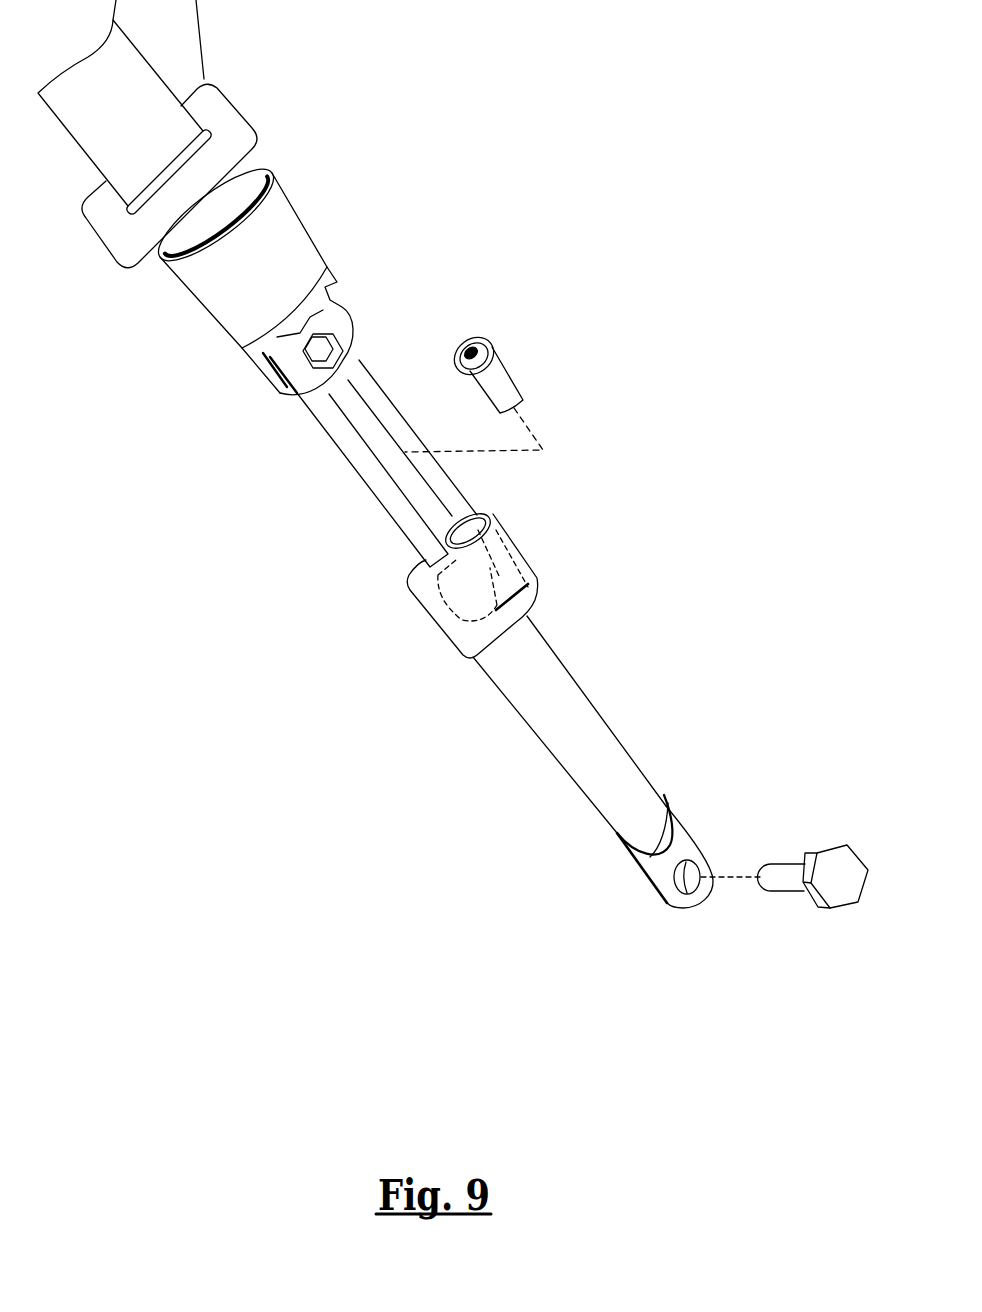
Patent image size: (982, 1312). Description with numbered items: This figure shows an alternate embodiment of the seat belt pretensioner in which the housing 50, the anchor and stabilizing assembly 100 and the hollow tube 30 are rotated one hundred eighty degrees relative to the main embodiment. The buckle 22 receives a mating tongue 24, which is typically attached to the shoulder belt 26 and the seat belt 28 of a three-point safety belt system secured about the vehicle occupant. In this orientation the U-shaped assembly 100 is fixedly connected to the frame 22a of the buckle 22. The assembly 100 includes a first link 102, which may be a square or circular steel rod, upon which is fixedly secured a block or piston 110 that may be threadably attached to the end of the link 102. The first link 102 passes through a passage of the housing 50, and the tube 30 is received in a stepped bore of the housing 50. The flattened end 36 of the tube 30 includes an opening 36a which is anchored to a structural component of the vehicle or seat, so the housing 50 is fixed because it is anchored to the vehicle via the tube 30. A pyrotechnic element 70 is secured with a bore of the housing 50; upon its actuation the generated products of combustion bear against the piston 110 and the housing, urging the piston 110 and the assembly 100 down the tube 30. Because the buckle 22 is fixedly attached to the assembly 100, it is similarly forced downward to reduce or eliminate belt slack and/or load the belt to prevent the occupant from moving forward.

The buckle 22 is at (293, 195).
The frame of the buckle 22a is at (342, 307).
The tongue 24 is at (227, 127).
The shoulder belt 26 is at (173, 36).
The seat belt 28 is at (125, 108).
The hollow tube 30 is at (613, 731).
The flattened end of the tube 36 is at (680, 843).
The opening 36a is at (703, 867).
The housing 50 is at (531, 541).
The pyrotechnic element 70 is at (517, 367).
The anchor and stabilizing assembly 100 is at (367, 385).
The first link 102 is at (343, 443).
The piston 110 is at (467, 613).